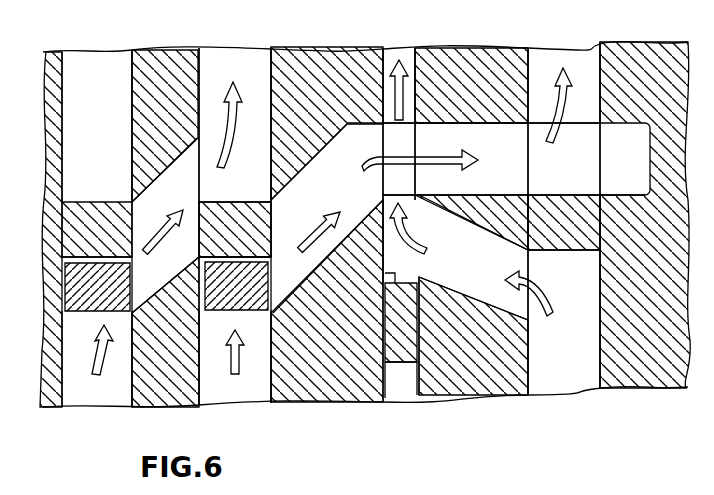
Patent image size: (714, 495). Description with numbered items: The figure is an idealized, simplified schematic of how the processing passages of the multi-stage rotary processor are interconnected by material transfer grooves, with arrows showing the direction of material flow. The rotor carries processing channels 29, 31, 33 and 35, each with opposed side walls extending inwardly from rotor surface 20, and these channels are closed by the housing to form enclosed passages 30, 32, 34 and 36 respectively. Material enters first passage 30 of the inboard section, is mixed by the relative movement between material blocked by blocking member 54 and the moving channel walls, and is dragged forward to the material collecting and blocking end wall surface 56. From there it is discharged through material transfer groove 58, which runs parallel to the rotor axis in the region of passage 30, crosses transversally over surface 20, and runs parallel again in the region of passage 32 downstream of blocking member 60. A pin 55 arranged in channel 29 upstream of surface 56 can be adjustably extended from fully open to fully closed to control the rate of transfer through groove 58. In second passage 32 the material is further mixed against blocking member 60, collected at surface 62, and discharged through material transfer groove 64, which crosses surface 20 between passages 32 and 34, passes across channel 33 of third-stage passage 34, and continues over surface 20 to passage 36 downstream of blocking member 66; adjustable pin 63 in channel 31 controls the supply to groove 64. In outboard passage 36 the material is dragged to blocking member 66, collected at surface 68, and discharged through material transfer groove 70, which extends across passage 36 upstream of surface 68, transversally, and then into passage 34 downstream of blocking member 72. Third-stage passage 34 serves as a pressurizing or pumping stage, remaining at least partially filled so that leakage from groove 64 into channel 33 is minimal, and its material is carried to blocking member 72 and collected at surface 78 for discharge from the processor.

The rotor surface 20 is at (155, 50).
The processing channel 29 is at (97, 64).
The first passage 30 is at (104, 407).
The processing channel 31 is at (253, 54).
The second passage 32 is at (250, 395).
The processing channel 33 is at (408, 50).
The third-stage passage 34 is at (403, 391).
The processing channel 35 is at (554, 55).
The passage 36 is at (560, 380).
The blocking member 54 is at (93, 218).
The pin 55 is at (103, 307).
The end wall surface 56 is at (78, 257).
The material transfer groove 58 is at (183, 205).
The blocking member 60 is at (227, 220).
The surface 62 is at (266, 260).
The adjustable pin 63 is at (229, 304).
The material transfer groove 64 is at (427, 141).
The blocking member 66 is at (572, 208).
The surface 68 is at (555, 253).
The material transfer groove 70 is at (478, 273).
The blocking member 72 is at (410, 341).
The surface 78 is at (388, 276).